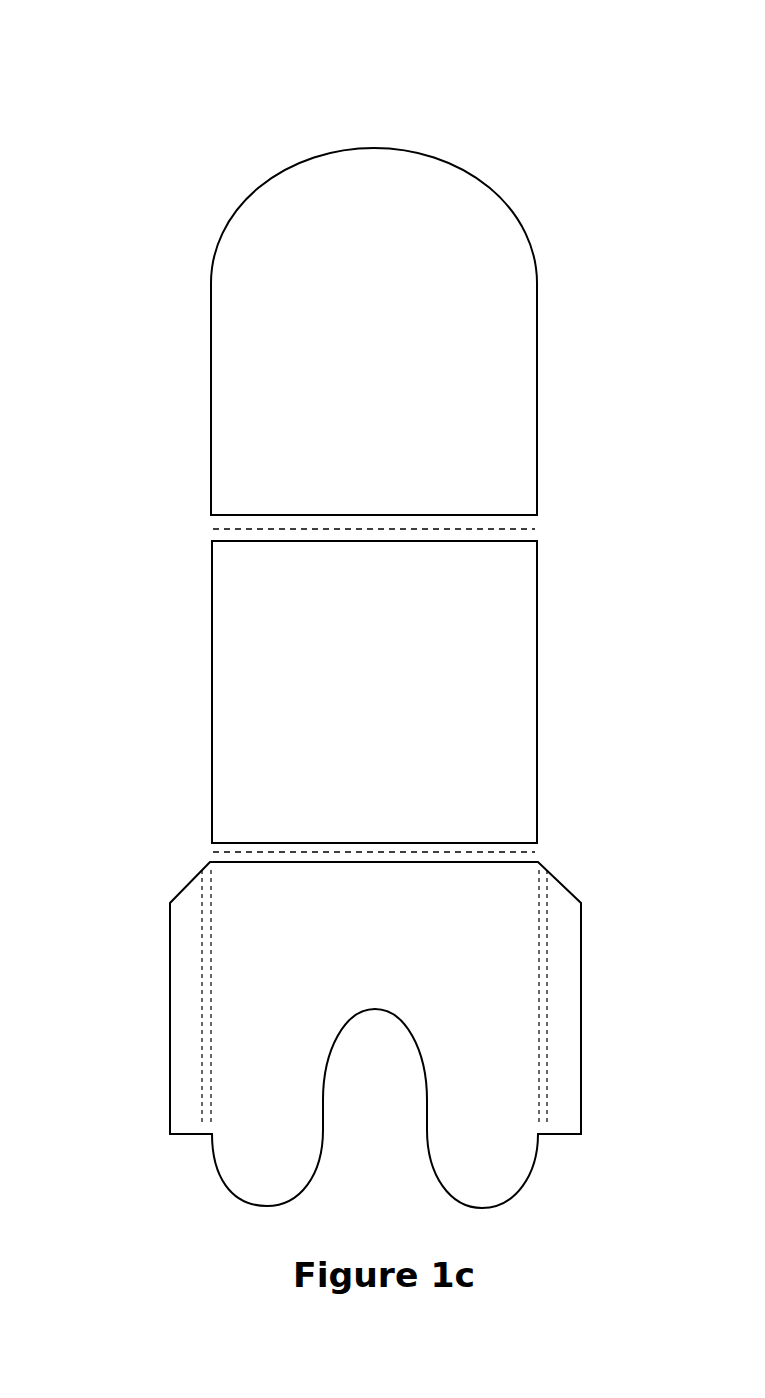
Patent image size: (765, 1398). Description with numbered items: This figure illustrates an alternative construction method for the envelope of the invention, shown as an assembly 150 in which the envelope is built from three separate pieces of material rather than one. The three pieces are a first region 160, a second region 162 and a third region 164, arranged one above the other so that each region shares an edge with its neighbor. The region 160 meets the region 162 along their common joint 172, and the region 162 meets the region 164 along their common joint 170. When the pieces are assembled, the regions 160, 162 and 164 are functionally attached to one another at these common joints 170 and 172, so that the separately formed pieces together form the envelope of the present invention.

The sheet-metal blank / body assembly 150 is at (408, 95).
The region 160 is at (502, 358).
The region 162 is at (263, 690).
The region 164 is at (232, 960).
The common joint 170 is at (532, 853).
The common joint 172 is at (523, 531).